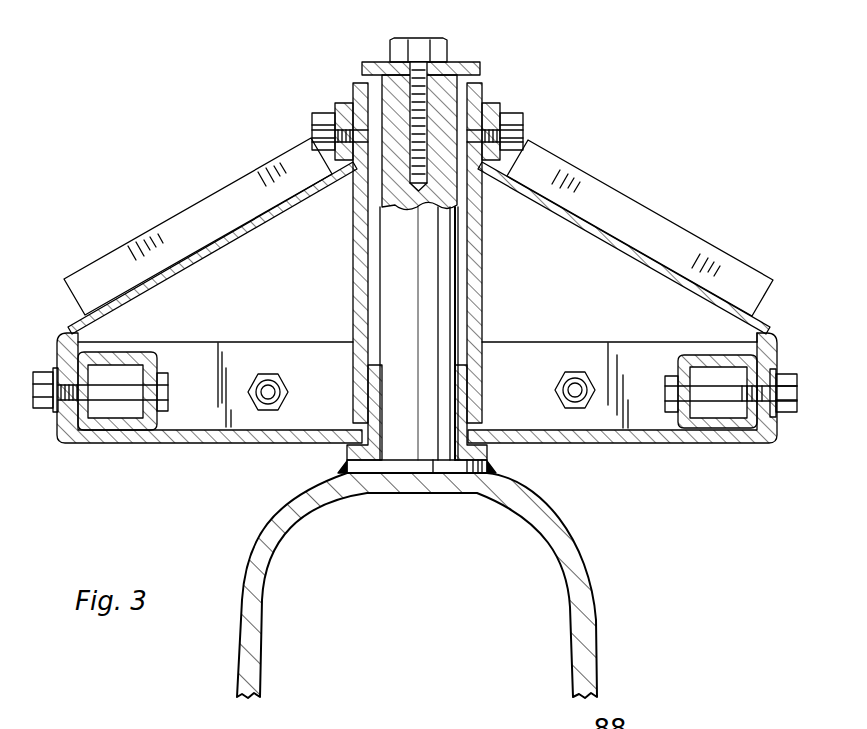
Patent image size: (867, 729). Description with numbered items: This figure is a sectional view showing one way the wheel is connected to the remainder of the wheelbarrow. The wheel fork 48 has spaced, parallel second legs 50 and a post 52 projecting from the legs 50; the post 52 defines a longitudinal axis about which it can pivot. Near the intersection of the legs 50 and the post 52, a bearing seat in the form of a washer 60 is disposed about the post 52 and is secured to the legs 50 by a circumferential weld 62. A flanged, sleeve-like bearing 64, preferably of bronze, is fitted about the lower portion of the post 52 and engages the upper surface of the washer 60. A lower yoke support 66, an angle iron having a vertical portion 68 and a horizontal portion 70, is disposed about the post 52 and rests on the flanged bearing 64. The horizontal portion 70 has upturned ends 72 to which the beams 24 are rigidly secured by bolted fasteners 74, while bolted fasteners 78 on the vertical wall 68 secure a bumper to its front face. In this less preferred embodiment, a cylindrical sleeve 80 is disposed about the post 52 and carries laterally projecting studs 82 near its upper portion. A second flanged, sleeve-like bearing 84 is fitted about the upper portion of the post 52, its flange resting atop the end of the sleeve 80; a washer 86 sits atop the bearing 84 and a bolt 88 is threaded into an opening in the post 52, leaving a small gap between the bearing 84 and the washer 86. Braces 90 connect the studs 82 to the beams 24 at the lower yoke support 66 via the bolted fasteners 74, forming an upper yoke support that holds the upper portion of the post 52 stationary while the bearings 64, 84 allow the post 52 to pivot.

The beams 24 is at (745, 352).
The wheel fork 48 is at (388, 585).
The second legs 50 is at (268, 593).
The post 52 is at (438, 283).
The washer 60 is at (402, 473).
The circumferential weld 62 is at (345, 467).
The flanged, sleeve-like bearing 64 is at (465, 396).
The lower yoke support 66 is at (421, 585).
The vertical portion 68 is at (513, 358).
The horizontal portion 70 is at (688, 443).
The upturned ends 72 is at (770, 358).
The bolted fasteners 74 is at (163, 380).
The bolted fasteners 78 is at (268, 387).
The cylindrical sleeve 80 is at (360, 275).
The studs 82 is at (310, 127).
The flanged, sleeve-like bearing 84 is at (482, 88).
The washer 86 is at (463, 72).
The bolt 88 is at (443, 42).
The braces 90 is at (232, 203).